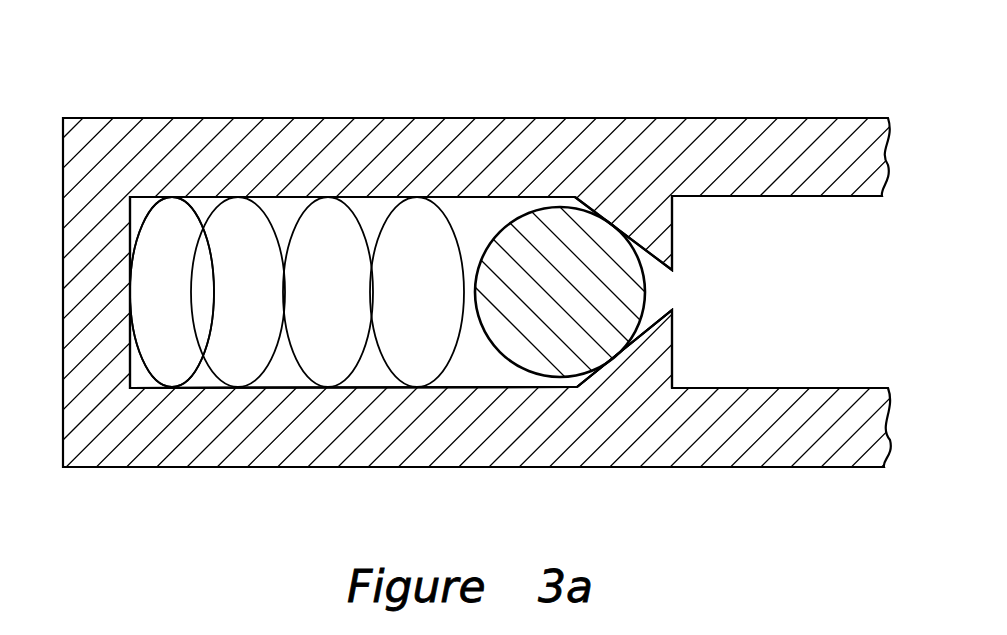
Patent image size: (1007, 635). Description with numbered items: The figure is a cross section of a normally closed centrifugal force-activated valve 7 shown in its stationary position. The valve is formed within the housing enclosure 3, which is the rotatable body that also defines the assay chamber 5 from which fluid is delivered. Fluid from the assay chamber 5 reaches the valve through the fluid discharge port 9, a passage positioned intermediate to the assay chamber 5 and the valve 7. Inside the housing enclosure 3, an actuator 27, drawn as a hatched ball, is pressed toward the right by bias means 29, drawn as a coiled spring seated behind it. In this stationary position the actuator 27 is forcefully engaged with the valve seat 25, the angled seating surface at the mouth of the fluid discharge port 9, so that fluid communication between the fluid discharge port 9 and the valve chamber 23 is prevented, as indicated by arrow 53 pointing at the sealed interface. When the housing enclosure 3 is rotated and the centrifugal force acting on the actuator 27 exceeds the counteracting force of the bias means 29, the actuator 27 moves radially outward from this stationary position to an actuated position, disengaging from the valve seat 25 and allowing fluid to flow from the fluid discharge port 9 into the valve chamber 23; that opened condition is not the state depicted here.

The housing enclosure 3 is at (510, 118).
The assay chamber 5 is at (805, 227).
The centrifugal force-activated valve 7 is at (249, 197).
The fluid discharge port 9 is at (668, 285).
The valve chamber 23 is at (372, 224).
The valve seat 25 is at (623, 343).
The actuator 27 is at (562, 247).
The bias means 29 is at (193, 363).
The arrow indicating prevented fluid communication 53 is at (650, 308).